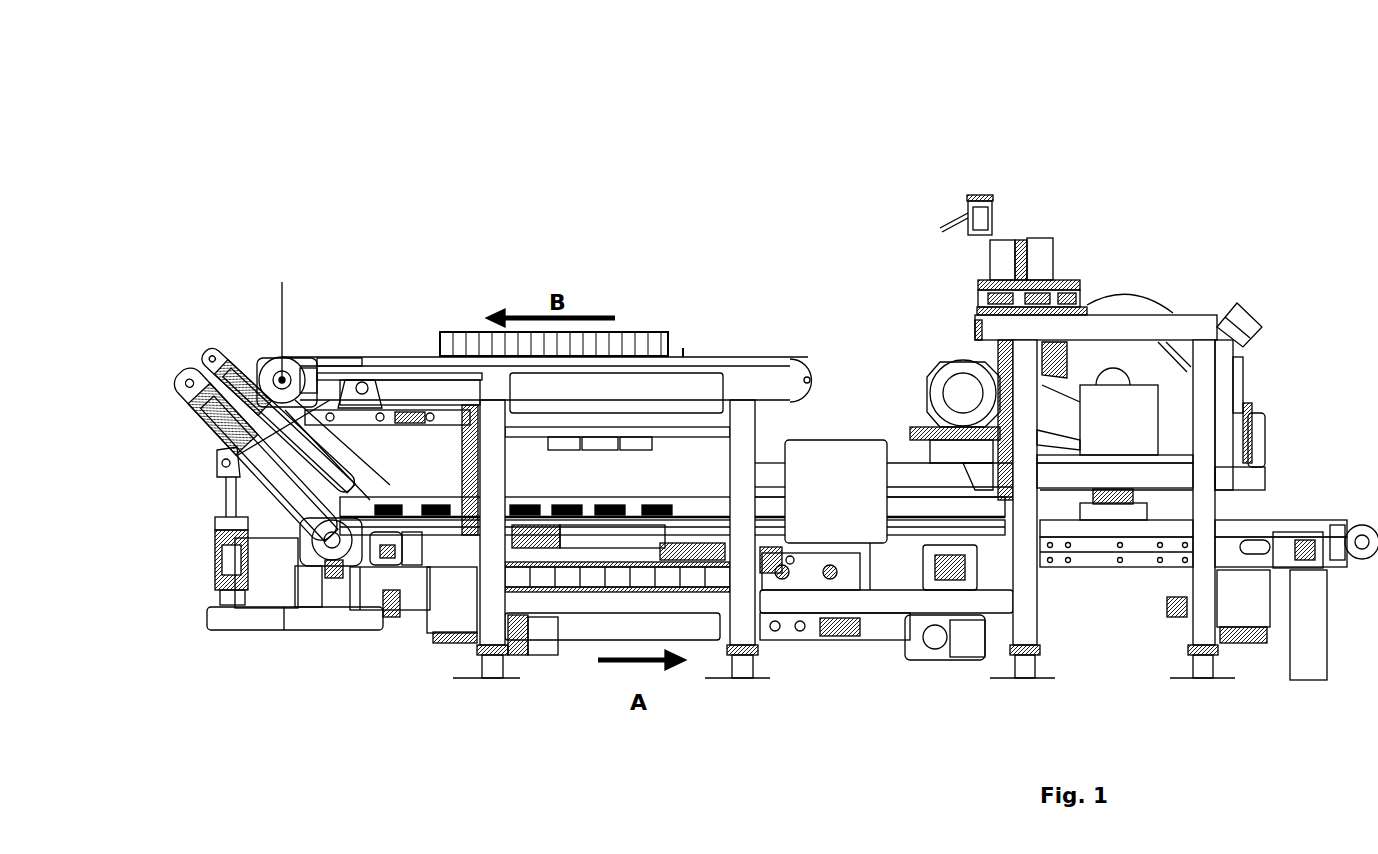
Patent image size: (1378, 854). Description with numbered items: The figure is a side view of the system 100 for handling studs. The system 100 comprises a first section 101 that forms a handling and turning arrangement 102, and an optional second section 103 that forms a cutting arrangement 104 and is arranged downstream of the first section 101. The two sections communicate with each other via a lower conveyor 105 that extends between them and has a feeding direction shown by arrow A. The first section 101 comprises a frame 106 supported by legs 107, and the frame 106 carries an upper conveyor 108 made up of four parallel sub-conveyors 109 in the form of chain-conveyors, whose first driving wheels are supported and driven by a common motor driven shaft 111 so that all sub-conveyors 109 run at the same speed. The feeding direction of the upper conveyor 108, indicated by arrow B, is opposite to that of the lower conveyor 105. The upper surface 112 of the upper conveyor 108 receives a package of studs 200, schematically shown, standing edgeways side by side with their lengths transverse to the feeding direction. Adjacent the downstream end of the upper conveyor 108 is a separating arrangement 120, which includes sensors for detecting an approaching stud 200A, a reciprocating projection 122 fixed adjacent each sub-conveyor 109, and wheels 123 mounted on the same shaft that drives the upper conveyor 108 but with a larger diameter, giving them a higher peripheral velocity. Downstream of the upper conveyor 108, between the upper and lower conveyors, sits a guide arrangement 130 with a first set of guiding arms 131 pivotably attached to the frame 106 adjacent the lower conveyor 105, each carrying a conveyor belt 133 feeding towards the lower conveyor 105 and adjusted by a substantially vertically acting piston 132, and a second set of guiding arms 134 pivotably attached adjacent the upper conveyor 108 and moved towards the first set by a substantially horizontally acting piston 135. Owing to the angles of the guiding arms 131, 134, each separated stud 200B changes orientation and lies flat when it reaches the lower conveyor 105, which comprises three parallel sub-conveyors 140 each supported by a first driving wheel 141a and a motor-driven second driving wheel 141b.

The system 100 is at (864, 274).
The first section 101 is at (577, 244).
The handling and turning arrangement 102 is at (760, 539).
The second section 103 is at (1087, 393).
The cutting arrangement 104 is at (1013, 267).
The lower conveyor 105 is at (672, 661).
The frame 106 is at (879, 627).
The legs 107 is at (886, 625).
The upper conveyor 108 is at (553, 306).
The sub-conveyors 109 is at (547, 262).
The motor driven shaft 111 is at (294, 356).
The upper surface 112 is at (683, 348).
The separating arrangement 120 is at (266, 440).
The reciprocating projection 122 is at (344, 246).
The wheels 123 is at (281, 267).
The guide arrangement 130 is at (236, 507).
The first set of guiding arms 131 is at (219, 364).
The vertically acting piston 132 is at (210, 645).
The conveyor belt 133 is at (284, 427).
The second set of guiding arms 134 is at (196, 430).
The horizontally acting piston 135 is at (399, 264).
The sub-conveyors 140 is at (672, 604).
The first driving wheel 141a is at (358, 650).
The second driving wheel 141b is at (1209, 610).
The package of studs 200 is at (554, 280).
The stud 200A is at (481, 268).
The separated stud 200B is at (523, 669).